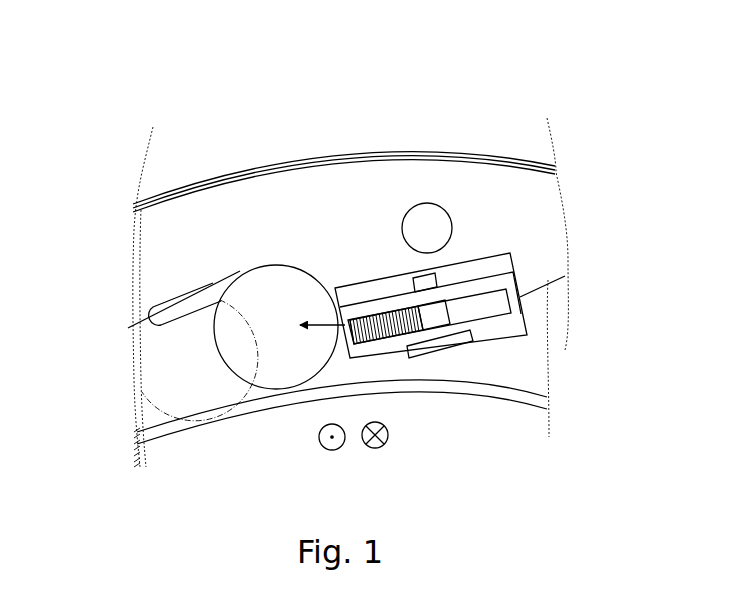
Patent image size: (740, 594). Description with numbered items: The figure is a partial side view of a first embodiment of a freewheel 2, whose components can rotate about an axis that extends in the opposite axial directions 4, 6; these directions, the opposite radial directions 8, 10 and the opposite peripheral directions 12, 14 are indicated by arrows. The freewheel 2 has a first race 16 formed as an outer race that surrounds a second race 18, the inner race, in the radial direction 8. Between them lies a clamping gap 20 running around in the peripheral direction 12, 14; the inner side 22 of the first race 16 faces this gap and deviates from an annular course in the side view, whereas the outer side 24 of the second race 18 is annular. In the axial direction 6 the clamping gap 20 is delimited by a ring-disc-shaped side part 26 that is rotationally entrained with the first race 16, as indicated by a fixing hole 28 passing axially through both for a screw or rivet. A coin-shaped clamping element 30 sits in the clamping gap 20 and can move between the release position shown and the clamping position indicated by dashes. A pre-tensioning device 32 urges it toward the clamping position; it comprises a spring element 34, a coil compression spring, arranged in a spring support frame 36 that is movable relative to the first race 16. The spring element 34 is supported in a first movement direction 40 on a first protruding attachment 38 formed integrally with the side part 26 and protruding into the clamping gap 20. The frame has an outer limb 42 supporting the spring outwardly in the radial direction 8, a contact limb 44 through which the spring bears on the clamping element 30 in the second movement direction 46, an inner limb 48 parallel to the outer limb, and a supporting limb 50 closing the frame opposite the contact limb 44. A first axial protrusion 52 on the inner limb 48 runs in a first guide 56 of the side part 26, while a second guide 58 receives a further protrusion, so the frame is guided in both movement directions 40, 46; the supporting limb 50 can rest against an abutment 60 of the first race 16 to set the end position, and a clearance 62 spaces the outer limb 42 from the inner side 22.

The freewheel 2 is at (452, 102).
The axial direction 4 is at (331, 450).
The axial direction 6 is at (372, 448).
The radial direction 8 is at (277, 133).
The radial direction 10 is at (333, 68).
The peripheral direction 12 is at (105, 297).
The peripheral direction 14 is at (633, 279).
The first race 16 is at (297, 263).
The second race 18 is at (477, 405).
The clamping gap 20 is at (135, 398).
The inner side 22 is at (152, 284).
The outer side 24 is at (197, 425).
The side part 26 is at (540, 360).
The fixing hole 28 is at (428, 203).
The clamping element 30 is at (233, 298).
The pre-tensioning device 32 is at (476, 225).
The spring element 34 is at (391, 310).
The spring support frame 36 is at (507, 316).
The first protruding attachment 38 is at (437, 337).
The first movement direction 40 is at (485, 313).
The outer limb 42 is at (498, 258).
The contact limb 44 is at (337, 342).
The second movement direction 46 is at (348, 316).
The inner limb 48 is at (372, 348).
The supporting limb 50 is at (548, 410).
The first axial protrusion 52 is at (485, 334).
The first guide 56 is at (418, 347).
The second guide 58 is at (332, 367).
The abutment 60 is at (537, 245).
The clearance 62 is at (551, 223).